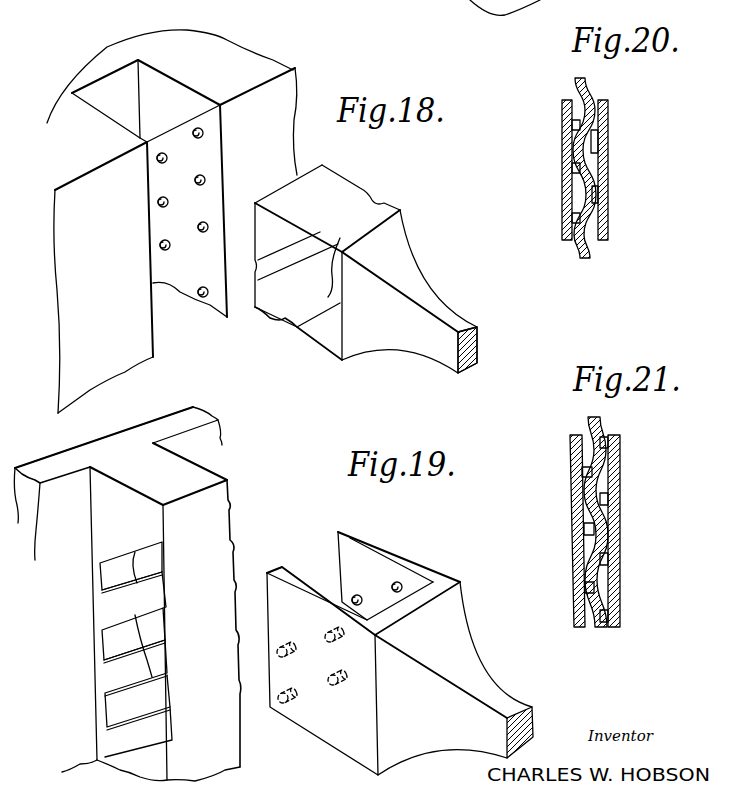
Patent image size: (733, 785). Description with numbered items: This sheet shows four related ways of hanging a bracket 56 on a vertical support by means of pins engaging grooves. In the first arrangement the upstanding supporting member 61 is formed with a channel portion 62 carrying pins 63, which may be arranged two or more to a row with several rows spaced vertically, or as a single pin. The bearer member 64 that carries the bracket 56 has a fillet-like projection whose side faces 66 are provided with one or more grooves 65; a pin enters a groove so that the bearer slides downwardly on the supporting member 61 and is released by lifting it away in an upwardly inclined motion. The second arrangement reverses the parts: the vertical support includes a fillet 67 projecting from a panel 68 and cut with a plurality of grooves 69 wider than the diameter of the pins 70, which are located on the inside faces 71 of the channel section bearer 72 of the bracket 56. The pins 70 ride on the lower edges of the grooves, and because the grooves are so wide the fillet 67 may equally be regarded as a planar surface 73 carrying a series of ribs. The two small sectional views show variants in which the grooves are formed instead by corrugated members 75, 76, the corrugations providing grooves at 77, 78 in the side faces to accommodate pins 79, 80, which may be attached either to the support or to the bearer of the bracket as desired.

In FIG. 18, the bracket 56 is at (453, 313).
In FIG. 19, the bracket 56 is at (497, 685).
In FIG. 18, the upstanding supporting member 61 is at (278, 70).
In FIG. 18, the channel portion 62 is at (187, 96).
In FIG. 18, the pins 63 is at (197, 140).
In FIG. 18, the bearer member 64 is at (347, 185).
In FIG. 18, the grooves 65 is at (315, 240).
In FIG. 18, the side faces 66 is at (277, 310).
In FIG. 19, the fillet 67 is at (210, 477).
In FIG. 19, the panel 68 is at (132, 430).
In FIG. 19, the grooves 69 is at (163, 657).
In FIG. 19, the pins 70 is at (292, 687).
In FIG. 19, the inside faces 71 is at (320, 567).
In FIG. 19, the channel section bearer 72 is at (153, 611).
In FIG. 19, the planar surface 73 is at (116, 528).
In FIG. 20, the corrugated member 75 is at (585, 88).
In FIG. 21, the corrugated member 76 is at (603, 424).
In FIG. 20, the grooves 77 is at (592, 140).
In FIG. 21, the grooves 78 is at (582, 458).
In FIG. 20, the pins 79 is at (575, 125).
In FIG. 21, the pins 80 is at (580, 580).